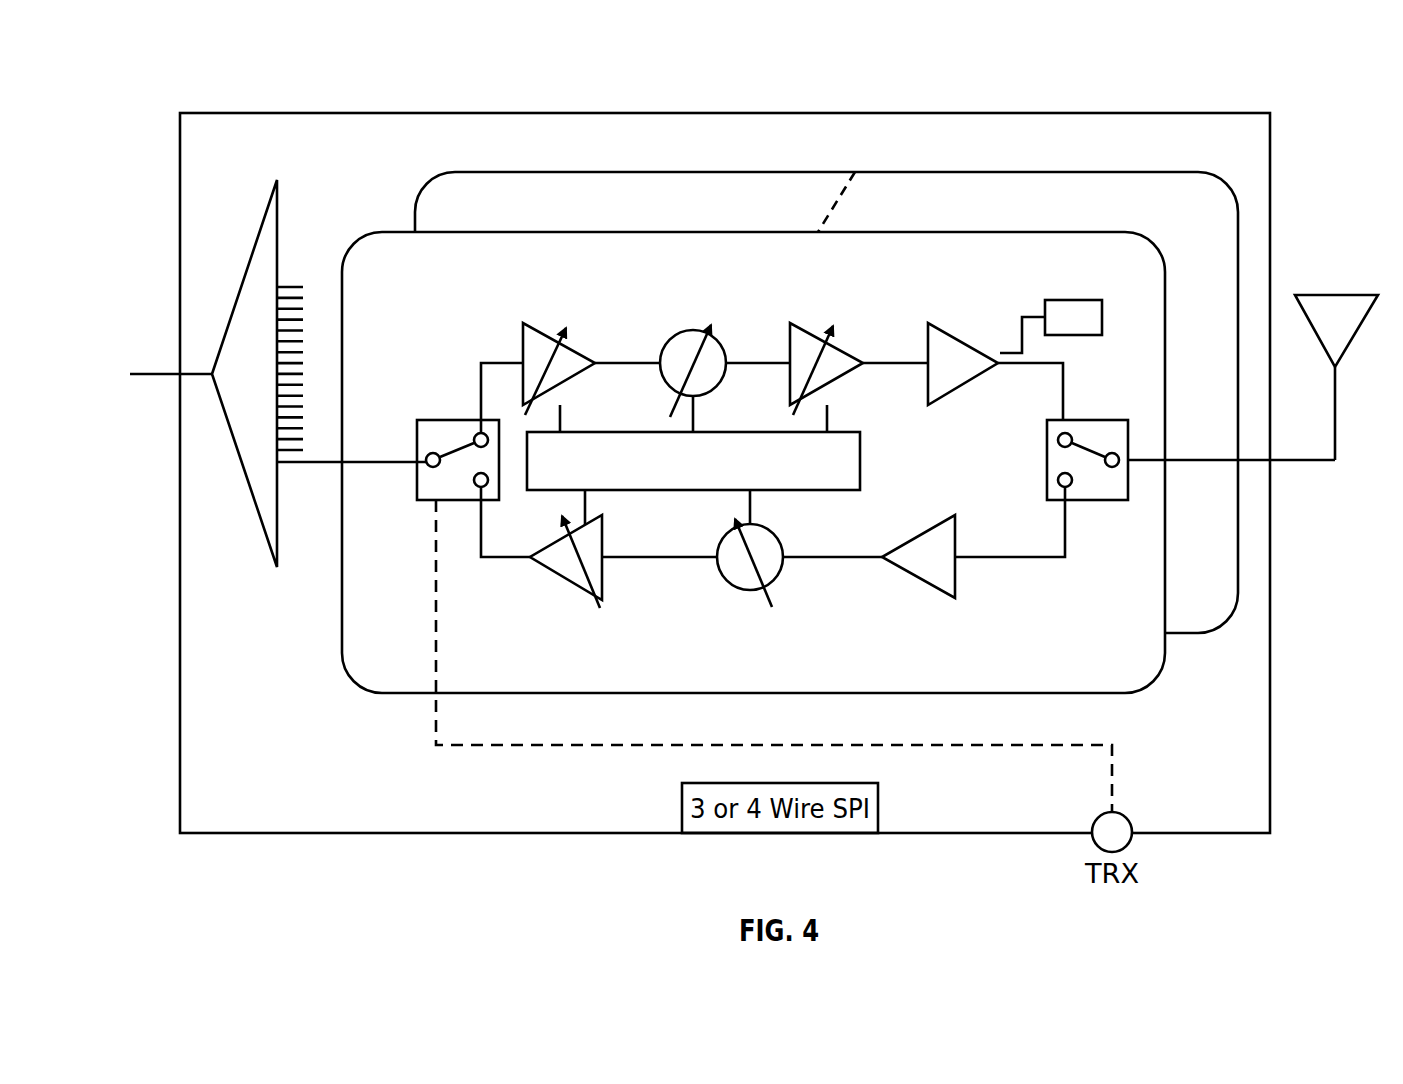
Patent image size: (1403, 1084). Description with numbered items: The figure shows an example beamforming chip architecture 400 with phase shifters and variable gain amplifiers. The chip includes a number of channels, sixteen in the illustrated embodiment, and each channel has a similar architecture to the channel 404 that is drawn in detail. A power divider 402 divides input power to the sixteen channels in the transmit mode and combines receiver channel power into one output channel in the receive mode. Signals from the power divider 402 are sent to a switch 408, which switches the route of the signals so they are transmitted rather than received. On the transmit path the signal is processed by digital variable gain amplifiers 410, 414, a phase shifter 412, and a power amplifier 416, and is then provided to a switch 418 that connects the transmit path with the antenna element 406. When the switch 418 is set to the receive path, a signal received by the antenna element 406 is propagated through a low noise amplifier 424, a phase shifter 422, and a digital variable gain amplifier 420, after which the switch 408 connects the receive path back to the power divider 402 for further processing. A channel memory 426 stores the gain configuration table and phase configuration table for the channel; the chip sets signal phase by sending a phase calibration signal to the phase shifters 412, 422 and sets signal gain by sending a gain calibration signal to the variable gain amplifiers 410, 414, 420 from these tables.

The beamforming chip architecture 400 is at (211, 88).
The power divider 402 is at (242, 282).
The channel 404 is at (400, 231).
The antenna element 406 is at (1361, 294).
The switch 408 is at (416, 480).
The digital variable gain amplifier 410 is at (522, 350).
The phase shifter 412 is at (666, 384).
The digital variable gain amplifier 414 is at (790, 385).
The power amplifier 416 is at (927, 384).
The switch 418 is at (1046, 463).
The digital variable gain amplifier 420 is at (554, 575).
The phase shifter 422 is at (777, 536).
The low noise amplifier 424 is at (958, 574).
The channel memory 426 is at (861, 462).